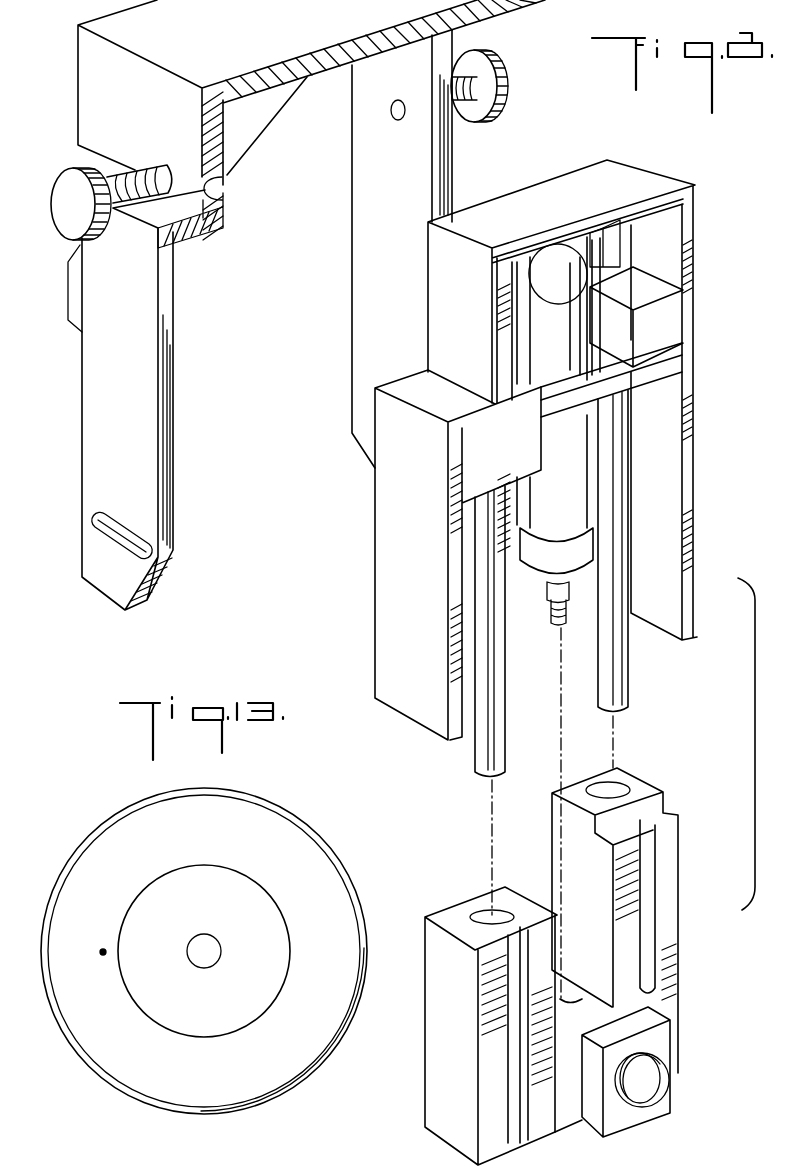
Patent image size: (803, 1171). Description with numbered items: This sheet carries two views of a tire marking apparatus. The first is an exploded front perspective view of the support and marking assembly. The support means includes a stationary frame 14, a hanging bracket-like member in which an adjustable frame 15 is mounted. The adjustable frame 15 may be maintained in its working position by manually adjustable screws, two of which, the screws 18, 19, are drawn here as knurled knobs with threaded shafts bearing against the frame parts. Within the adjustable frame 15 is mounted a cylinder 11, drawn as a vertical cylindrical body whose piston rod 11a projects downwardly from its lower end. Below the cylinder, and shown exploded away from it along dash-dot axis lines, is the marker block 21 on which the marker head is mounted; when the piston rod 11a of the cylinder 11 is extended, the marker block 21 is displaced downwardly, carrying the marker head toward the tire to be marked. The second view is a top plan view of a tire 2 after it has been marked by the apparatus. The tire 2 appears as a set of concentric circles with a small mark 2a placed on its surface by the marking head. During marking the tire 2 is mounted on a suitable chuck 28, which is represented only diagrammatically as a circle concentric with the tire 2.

In FIG. 13, the tire 2 is at (92, 1073).
In FIG. 13, the mark 2a is at (105, 953).
In FIG. 13, the chuck 28 is at (273, 1002).
In FIG. 8, the cylinder 11 is at (525, 523).
In FIG. 8, the piston rod 11a is at (548, 592).
In FIG. 8, the stationary frame 14 is at (87, 413).
In FIG. 8, the adjustable frame 15 is at (688, 503).
In FIG. 8, the manually adjustable screw 18 is at (494, 116).
In FIG. 8, the manually adjustable screw 19 is at (73, 173).
In FIG. 8, the marker block 21 is at (552, 1138).